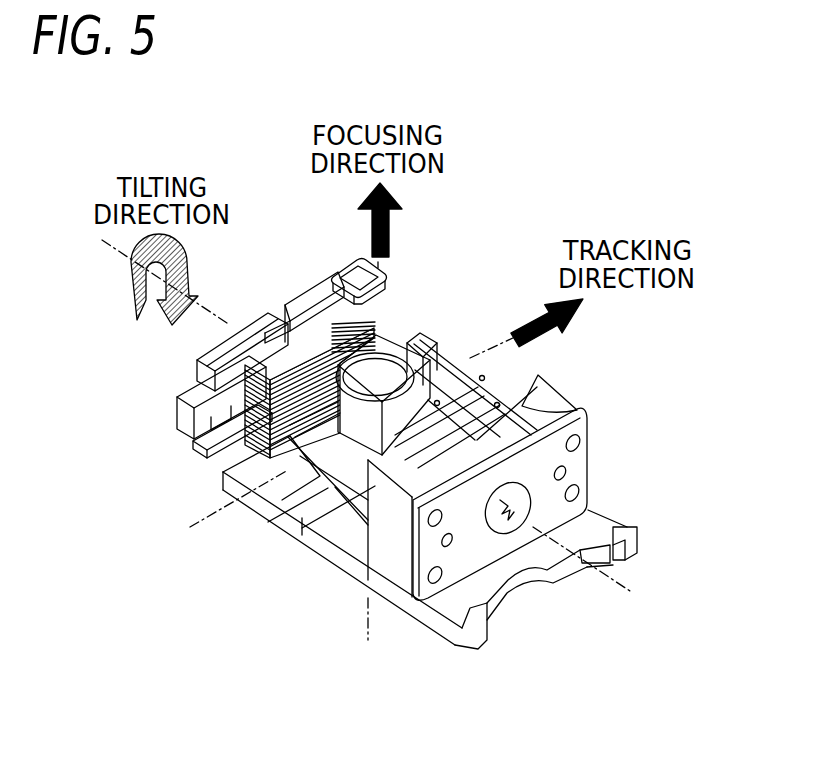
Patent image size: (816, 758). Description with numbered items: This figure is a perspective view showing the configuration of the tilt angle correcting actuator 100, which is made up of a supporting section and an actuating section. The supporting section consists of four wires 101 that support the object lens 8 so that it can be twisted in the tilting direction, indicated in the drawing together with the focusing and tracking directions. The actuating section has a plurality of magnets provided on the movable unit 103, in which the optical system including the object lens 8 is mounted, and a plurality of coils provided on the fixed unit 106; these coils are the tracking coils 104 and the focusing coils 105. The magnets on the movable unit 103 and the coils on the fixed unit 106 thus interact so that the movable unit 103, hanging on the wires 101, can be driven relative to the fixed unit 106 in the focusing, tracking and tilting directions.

The tilt angle correcting actuator 100 is at (528, 205).
The wires 101 is at (333, 520).
The movable unit 103 is at (437, 322).
The tracking coils 104 is at (285, 303).
The focusing coils 105 is at (332, 268).
The fixed unit 106 is at (548, 393).
The object lens 8 is at (577, 408).